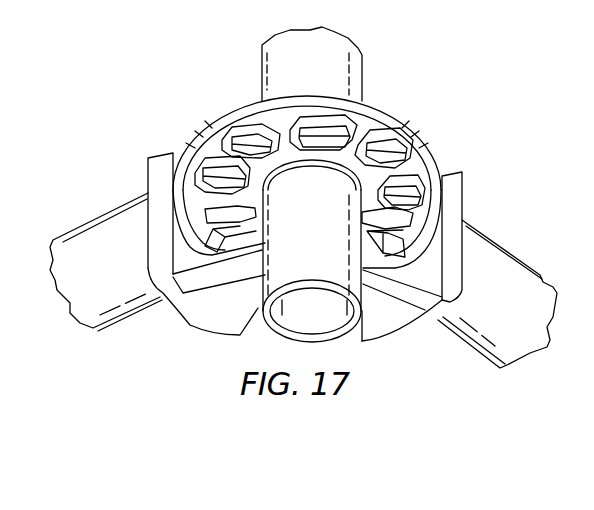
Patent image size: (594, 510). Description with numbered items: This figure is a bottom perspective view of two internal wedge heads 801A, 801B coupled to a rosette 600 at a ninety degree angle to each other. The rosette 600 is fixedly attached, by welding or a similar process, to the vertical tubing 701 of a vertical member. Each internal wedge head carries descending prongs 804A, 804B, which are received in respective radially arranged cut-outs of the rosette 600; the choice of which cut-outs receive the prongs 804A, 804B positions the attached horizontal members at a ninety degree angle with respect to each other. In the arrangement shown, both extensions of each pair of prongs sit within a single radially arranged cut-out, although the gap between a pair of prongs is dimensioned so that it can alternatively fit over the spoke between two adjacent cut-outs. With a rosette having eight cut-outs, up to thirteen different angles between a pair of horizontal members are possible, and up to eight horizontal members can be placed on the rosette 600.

The rosette 600 is at (238, 117).
The vertical tubing 701 is at (363, 75).
The internal wedge head 801A is at (383, 320).
The internal wedge head 801B is at (190, 310).
The descending prong 804A is at (372, 242).
The descending prong 804B is at (240, 212).